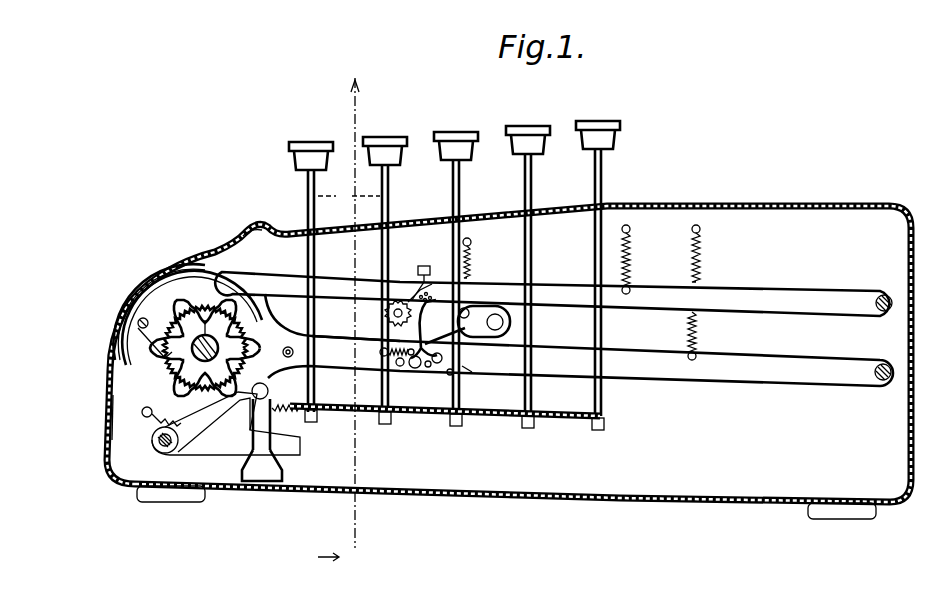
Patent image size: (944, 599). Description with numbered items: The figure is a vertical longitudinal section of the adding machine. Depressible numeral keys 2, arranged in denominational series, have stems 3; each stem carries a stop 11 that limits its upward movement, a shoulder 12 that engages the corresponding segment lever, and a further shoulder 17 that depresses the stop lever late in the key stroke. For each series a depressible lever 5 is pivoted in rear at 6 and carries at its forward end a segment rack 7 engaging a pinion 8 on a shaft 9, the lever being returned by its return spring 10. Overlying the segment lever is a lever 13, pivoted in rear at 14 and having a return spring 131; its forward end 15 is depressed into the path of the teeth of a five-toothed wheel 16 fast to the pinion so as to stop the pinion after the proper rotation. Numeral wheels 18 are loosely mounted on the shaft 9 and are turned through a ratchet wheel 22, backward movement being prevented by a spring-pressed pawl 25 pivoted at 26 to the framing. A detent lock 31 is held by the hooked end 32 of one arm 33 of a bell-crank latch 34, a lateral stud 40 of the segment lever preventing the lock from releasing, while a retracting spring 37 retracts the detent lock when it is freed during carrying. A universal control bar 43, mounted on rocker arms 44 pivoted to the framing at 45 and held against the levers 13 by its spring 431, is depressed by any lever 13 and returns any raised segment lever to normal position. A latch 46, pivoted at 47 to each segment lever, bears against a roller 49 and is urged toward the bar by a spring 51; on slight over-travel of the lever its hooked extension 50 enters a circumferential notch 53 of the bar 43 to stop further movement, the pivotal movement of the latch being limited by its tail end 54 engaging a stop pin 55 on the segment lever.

The numeral keys 2 is at (355, 140).
The key stems 3 is at (349, 196).
The depressible lever 5 is at (580, 361).
The pivot 6 is at (892, 372).
The segment rack 7 is at (238, 247).
The pinion 8 is at (222, 350).
The shaft 9 is at (242, 331).
The return spring 10 is at (702, 258).
The stop 11 is at (524, 424).
The shoulder 12 is at (383, 314).
The lever 13 is at (552, 294).
The return spring 131 is at (632, 258).
The pivot 14 is at (893, 303).
The forward end 15 is at (195, 267).
The wheel 16 is at (150, 289).
The shoulder 17 is at (368, 235).
The numeral wheel 18 is at (158, 268).
The ratchet wheel 22 is at (146, 416).
The spring-pressed pawl 25 is at (108, 372).
The pivot 26 is at (136, 323).
The detent lock 31 is at (272, 390).
The hooked end 32 is at (278, 464).
The arm 33 is at (214, 427).
The latch 34 is at (226, 435).
The retracting spring 37 is at (288, 414).
The lateral stud 40 is at (296, 352).
The universal control bar 43 is at (380, 352).
The spring 431 is at (472, 258).
The rocker arms 44 is at (449, 342).
The pivot 45 is at (513, 322).
The latch 46 is at (468, 310).
The pivot 47 is at (428, 367).
The roller 49 is at (430, 272).
The hooked extension 50 is at (433, 298).
The spring 51 is at (400, 366).
The circumferential notch 53 is at (420, 266).
The tail end 54 is at (452, 375).
The stop pin 55 is at (474, 373).